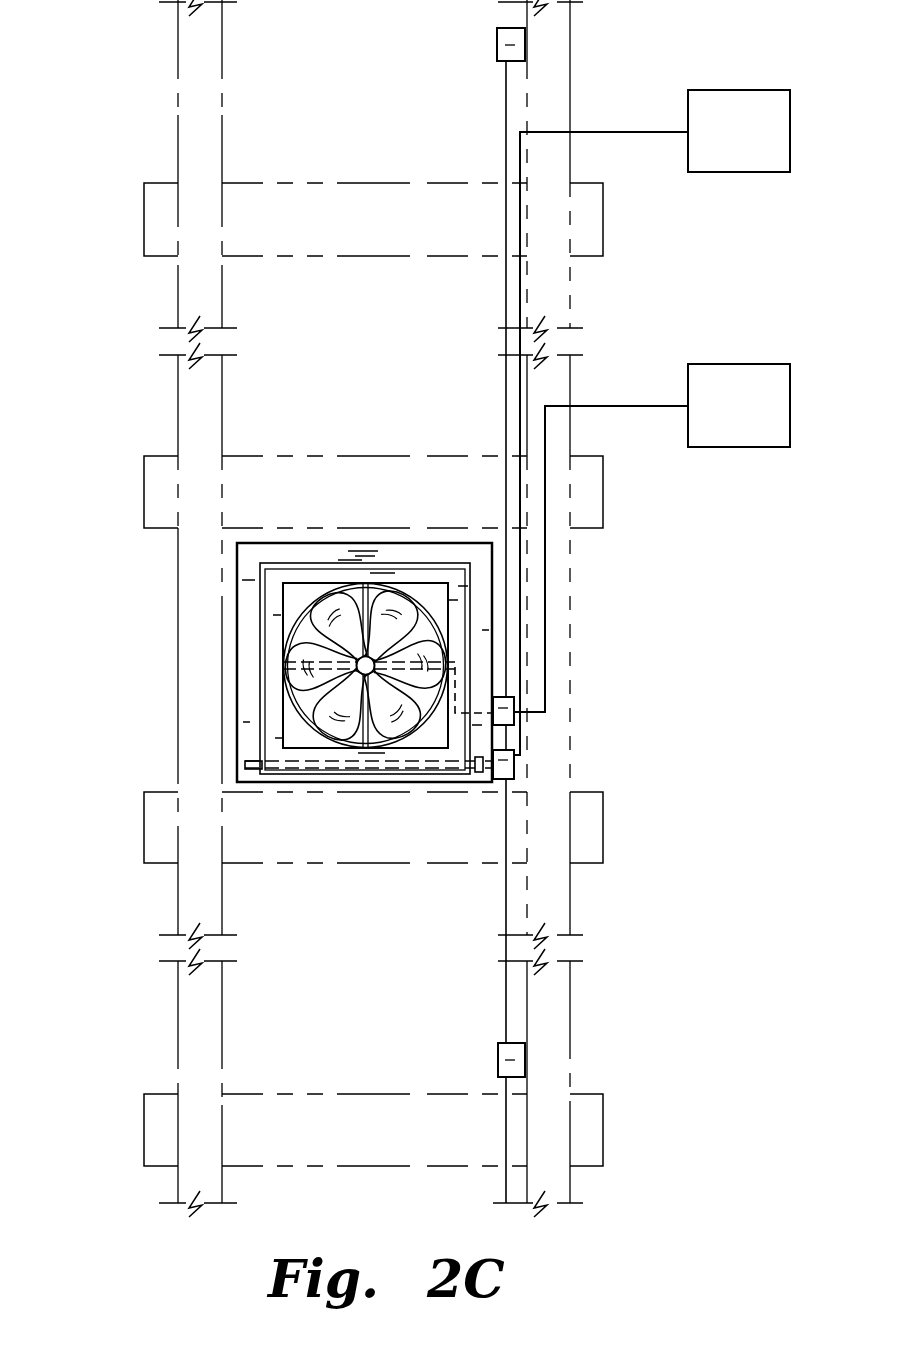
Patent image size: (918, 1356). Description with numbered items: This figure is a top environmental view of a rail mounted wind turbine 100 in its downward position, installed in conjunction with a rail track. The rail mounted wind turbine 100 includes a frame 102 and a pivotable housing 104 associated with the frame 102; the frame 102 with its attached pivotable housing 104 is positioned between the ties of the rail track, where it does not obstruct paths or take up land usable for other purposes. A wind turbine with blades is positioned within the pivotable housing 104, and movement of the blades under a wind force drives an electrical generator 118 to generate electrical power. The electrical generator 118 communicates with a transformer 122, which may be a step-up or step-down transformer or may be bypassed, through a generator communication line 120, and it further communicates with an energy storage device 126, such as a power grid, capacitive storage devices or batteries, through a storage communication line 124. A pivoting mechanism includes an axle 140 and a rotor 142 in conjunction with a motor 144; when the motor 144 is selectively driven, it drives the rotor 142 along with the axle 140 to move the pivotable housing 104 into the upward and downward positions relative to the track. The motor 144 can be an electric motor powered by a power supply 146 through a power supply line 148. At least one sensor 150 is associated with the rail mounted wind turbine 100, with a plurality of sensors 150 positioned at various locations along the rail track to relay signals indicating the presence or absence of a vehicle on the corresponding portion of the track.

The rail mounted wind turbine 100 is at (195, 617).
The frame 102 is at (483, 608).
The pivotable housing 104 is at (270, 712).
The electrical generator 118 is at (287, 637).
The generator communication line 120 is at (457, 682).
The transformer 122 is at (514, 723).
The storage communication line 124 is at (652, 406).
The energy storage device 126 is at (743, 447).
The axle 140 is at (334, 772).
The rotor 142 is at (480, 772).
The motor 144 is at (514, 770).
The power supply 146 is at (740, 172).
The power supply line 148 is at (640, 132).
The sensor 150 is at (497, 43).